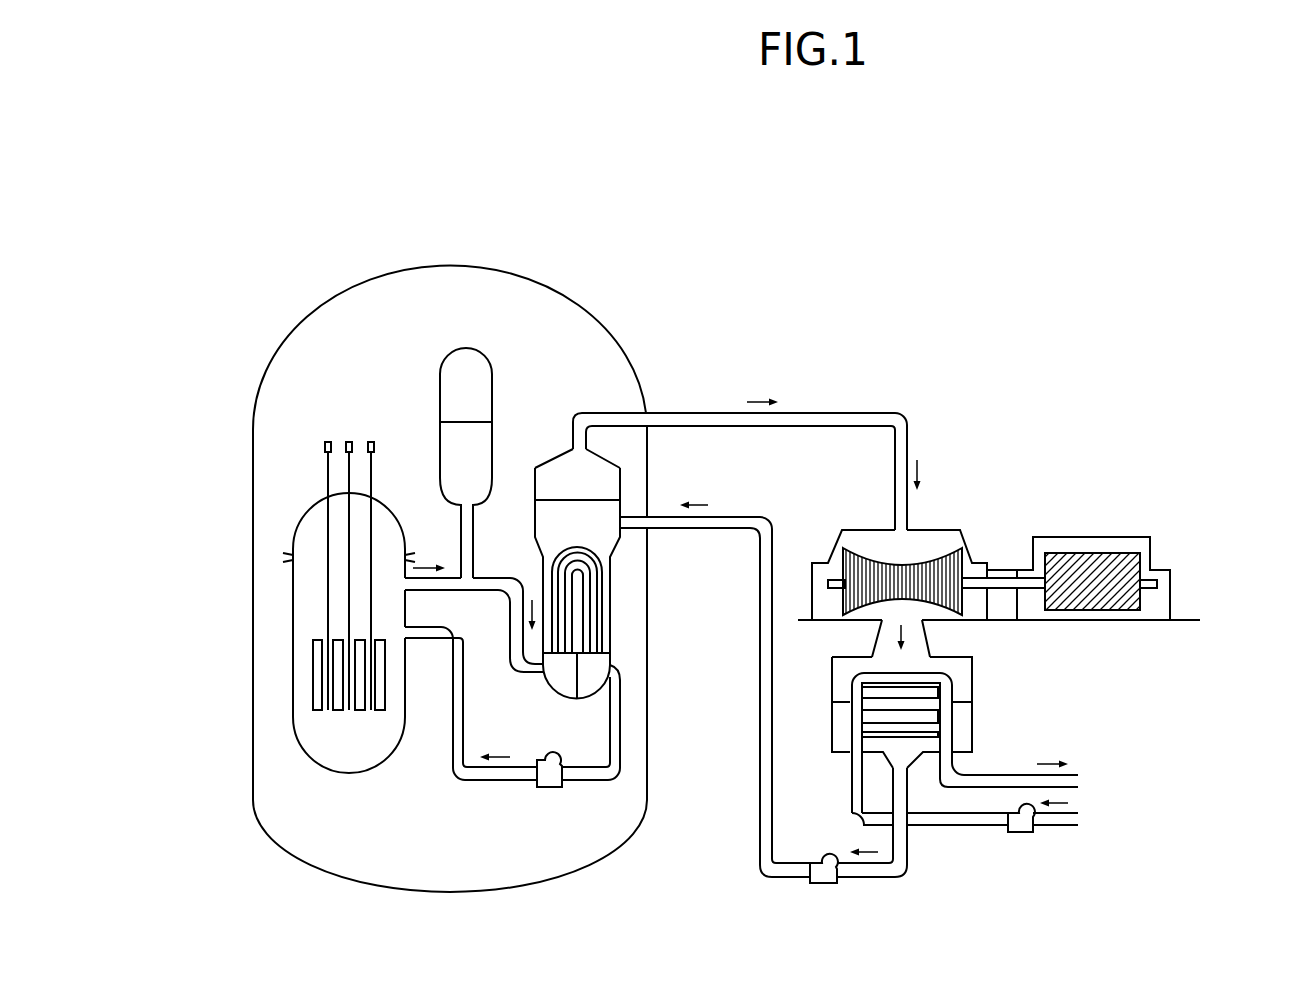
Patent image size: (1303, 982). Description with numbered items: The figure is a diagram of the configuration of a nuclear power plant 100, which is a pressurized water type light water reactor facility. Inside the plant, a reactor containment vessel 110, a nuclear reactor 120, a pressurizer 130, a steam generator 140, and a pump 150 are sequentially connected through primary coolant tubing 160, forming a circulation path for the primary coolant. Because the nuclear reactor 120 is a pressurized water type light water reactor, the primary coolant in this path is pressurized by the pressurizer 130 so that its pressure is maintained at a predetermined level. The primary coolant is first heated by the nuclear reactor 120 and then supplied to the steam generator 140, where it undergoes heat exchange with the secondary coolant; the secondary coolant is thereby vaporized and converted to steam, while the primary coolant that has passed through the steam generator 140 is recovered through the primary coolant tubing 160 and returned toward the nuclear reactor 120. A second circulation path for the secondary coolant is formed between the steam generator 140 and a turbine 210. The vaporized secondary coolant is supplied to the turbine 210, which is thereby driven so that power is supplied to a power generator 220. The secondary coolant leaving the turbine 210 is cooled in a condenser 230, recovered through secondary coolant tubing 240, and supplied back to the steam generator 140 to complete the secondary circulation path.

The nuclear power plant 100 is at (728, 508).
The reactor containment vessel 110 is at (450, 563).
The nuclear reactor 120 is at (292, 607).
The pressurizer 130 is at (440, 378).
The steam generator 140 is at (577, 472).
The pump 150 is at (551, 787).
The primary coolant tubing 160 is at (497, 577).
The turbine 210 is at (999, 556).
The power generator 220 is at (1117, 549).
The condenser 230 is at (1059, 735).
The secondary coolant tubing 240 is at (893, 411).